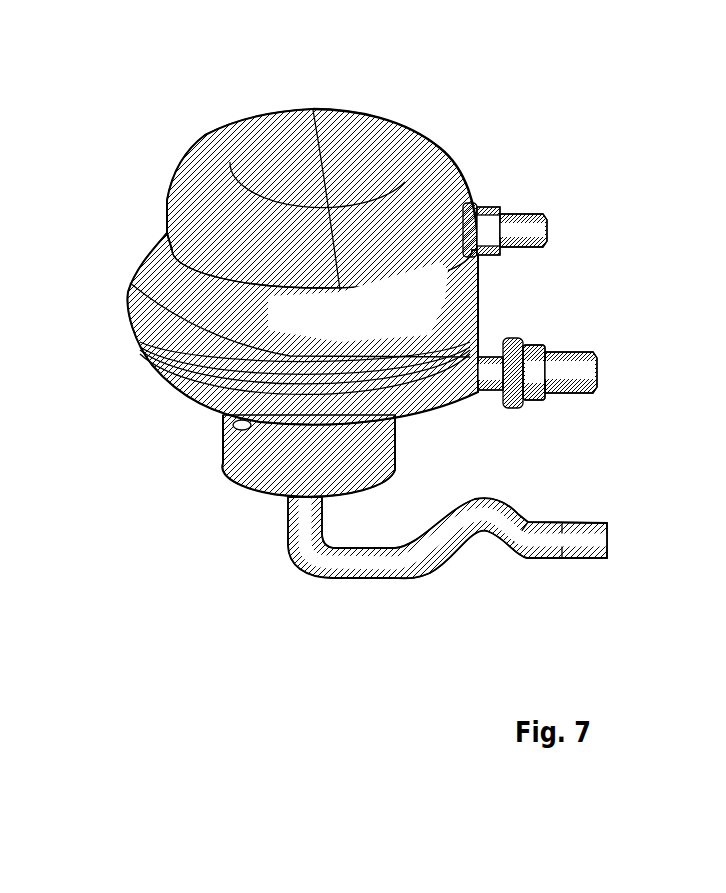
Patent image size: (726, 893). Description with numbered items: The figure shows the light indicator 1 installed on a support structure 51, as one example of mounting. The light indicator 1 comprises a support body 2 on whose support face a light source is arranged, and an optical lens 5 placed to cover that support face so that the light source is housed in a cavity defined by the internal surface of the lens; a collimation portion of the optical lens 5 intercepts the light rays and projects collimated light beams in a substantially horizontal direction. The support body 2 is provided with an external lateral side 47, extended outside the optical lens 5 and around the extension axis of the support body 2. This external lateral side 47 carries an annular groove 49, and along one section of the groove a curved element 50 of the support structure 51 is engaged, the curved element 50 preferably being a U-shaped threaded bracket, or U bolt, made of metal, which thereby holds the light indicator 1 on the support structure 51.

The light indicator 1 is at (386, 307).
The support body 2 is at (275, 372).
The optical lens 5 is at (196, 148).
The external lateral side 47 is at (257, 317).
The annular groove 49 is at (482, 312).
The curved element 50 is at (477, 385).
The support structure 51 is at (614, 340).